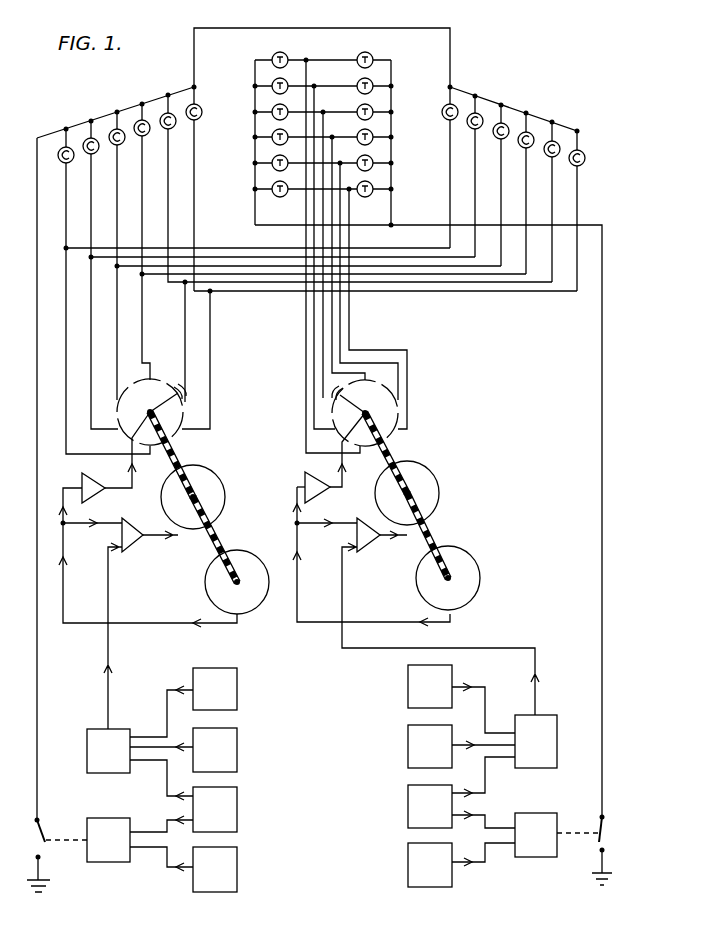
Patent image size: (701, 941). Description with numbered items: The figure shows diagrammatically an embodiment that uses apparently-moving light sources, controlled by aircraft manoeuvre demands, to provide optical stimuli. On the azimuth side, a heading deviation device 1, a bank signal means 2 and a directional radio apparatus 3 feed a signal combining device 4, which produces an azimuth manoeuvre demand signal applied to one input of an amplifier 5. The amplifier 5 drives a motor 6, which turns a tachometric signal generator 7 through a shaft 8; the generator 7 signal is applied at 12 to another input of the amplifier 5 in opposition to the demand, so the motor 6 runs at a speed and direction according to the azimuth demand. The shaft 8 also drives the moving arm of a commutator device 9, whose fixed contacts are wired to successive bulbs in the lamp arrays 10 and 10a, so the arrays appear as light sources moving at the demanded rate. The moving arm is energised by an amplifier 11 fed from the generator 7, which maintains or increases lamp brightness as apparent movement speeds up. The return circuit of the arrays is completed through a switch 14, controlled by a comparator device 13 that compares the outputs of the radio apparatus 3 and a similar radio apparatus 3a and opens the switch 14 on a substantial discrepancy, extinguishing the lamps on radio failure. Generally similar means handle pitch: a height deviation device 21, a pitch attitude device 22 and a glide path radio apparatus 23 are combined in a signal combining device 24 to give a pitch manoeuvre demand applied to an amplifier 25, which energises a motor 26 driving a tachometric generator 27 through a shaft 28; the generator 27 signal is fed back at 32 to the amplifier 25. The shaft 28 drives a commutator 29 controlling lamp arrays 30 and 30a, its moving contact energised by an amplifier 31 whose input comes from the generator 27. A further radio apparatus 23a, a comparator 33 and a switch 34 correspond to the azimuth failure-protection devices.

The heading deviation signal device 1 is at (227, 690).
The bank signal means 2 is at (228, 747).
The directional radio apparatus 3 is at (228, 805).
The directional radio apparatus 3a is at (228, 860).
The signal combining device 4 is at (87, 749).
The amplifier 5 is at (130, 540).
The motor 6 is at (220, 481).
The tachometric signal generator 7 is at (253, 587).
The shaft 8 is at (178, 450).
The commutator device 9 is at (172, 410).
The array of electric light bulbs 10 is at (130, 121).
The array of electric light bulbs 10a is at (513, 124).
The amplifier 11 is at (97, 497).
The tachometric feedback signal input 12 is at (78, 527).
The comparator device 13 is at (112, 840).
The switch 14 is at (47, 845).
The height deviation signal device 21 is at (408, 685).
The pitch attitude signal device 22 is at (408, 747).
The directional radio apparatus 23 is at (408, 802).
The further radio apparatus 23a is at (408, 865).
The signal combining device 24 is at (543, 730).
The amplifier 25 is at (365, 537).
The motor 26 is at (425, 475).
The tachometric generator 27 is at (465, 577).
The shaft 28 is at (392, 448).
The commutator 29 is at (465, 408).
The array of lamps 30 is at (303, 138).
The array of lamps 30a is at (394, 138).
The amplifier 31 is at (307, 480).
The tachometric feedback signal input 32 is at (308, 522).
The comparator 33 is at (542, 840).
The switch 34 is at (598, 840).